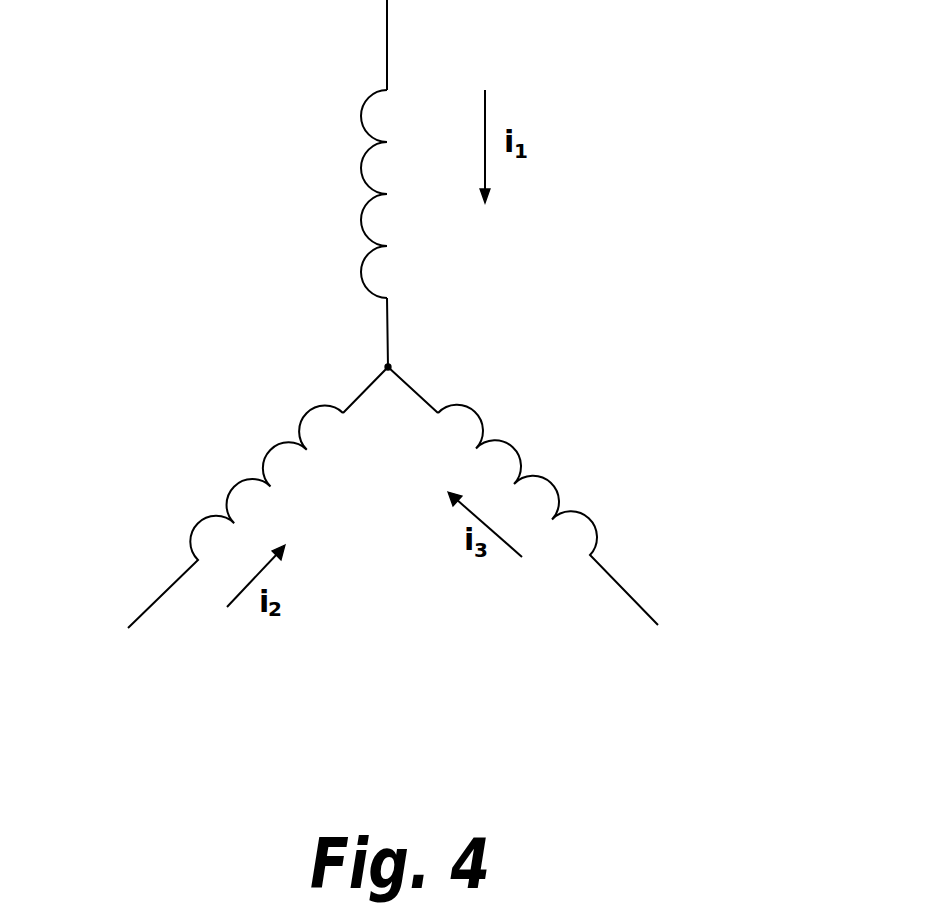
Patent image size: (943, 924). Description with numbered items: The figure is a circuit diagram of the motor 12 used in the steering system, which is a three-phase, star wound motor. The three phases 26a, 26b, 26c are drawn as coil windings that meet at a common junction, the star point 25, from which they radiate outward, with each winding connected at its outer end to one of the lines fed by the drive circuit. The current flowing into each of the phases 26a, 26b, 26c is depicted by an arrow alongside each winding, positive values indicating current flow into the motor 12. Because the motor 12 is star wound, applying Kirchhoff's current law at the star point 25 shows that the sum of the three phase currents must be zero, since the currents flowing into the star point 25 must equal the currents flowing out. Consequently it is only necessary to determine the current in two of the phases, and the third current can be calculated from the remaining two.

The motor 12 is at (580, 233).
The star point 25 is at (388, 367).
The phase 26a is at (365, 215).
The phase 26b is at (270, 449).
The phase 26c is at (518, 448).